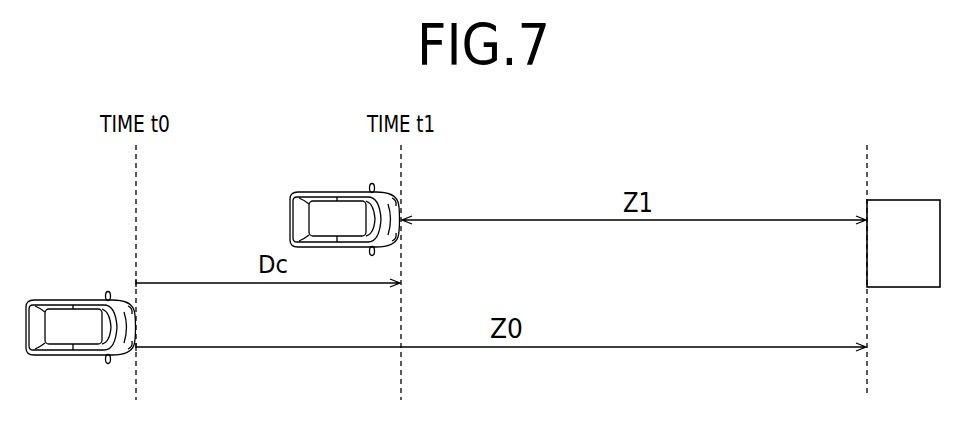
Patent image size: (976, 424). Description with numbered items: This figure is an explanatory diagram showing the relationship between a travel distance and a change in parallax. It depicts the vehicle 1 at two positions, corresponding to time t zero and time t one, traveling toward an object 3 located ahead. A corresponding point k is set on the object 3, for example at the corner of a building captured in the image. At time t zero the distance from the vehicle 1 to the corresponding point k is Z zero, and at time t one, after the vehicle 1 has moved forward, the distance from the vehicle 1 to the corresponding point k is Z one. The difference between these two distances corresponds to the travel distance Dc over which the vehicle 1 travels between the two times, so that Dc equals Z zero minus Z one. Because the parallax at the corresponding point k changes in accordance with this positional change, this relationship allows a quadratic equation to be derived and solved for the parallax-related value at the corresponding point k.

The vehicle 1 is at (37, 355).
The object 3 is at (921, 200).
The corresponding point k is at (869, 288).